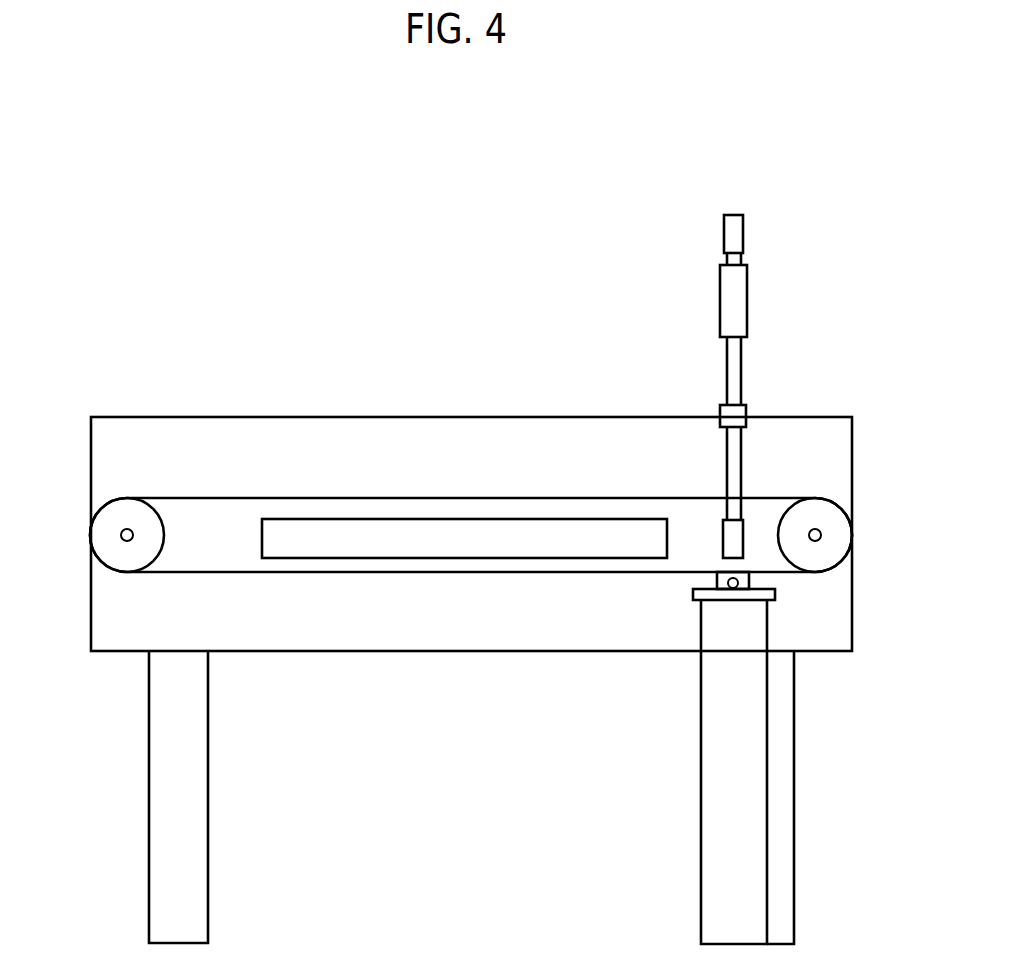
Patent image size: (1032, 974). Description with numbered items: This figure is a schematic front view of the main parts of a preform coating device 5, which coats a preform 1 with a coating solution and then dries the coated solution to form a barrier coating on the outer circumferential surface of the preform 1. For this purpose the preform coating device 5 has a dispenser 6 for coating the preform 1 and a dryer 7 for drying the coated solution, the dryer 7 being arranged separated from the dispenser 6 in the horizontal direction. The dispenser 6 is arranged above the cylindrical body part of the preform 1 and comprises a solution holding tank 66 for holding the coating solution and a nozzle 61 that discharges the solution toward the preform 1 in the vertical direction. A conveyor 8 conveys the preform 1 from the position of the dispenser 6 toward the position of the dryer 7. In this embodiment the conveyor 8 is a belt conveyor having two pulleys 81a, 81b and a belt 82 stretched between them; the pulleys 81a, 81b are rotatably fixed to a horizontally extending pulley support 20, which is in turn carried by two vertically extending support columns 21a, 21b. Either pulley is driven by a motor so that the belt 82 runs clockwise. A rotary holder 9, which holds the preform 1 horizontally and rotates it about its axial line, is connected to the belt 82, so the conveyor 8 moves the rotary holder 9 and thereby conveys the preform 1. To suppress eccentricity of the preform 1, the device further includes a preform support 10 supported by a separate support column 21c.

The preform coating device 5 is at (217, 238).
The pulley support 20 is at (320, 651).
The support column 21a is at (795, 850).
The support column 21b is at (208, 860).
The support column 21c is at (698, 882).
The preform support 10 is at (775, 596).
The rotary holder 9 is at (717, 578).
The preform 1 is at (750, 577).
The conveyor 8 is at (477, 587).
The belt 82 is at (570, 498).
The pulley 81a is at (830, 500).
The pulley 81b is at (110, 502).
The dryer 7 is at (472, 520).
The dispenser 6 is at (741, 368).
The solution holding tank 66 is at (720, 303).
The nozzle 61 is at (743, 533).